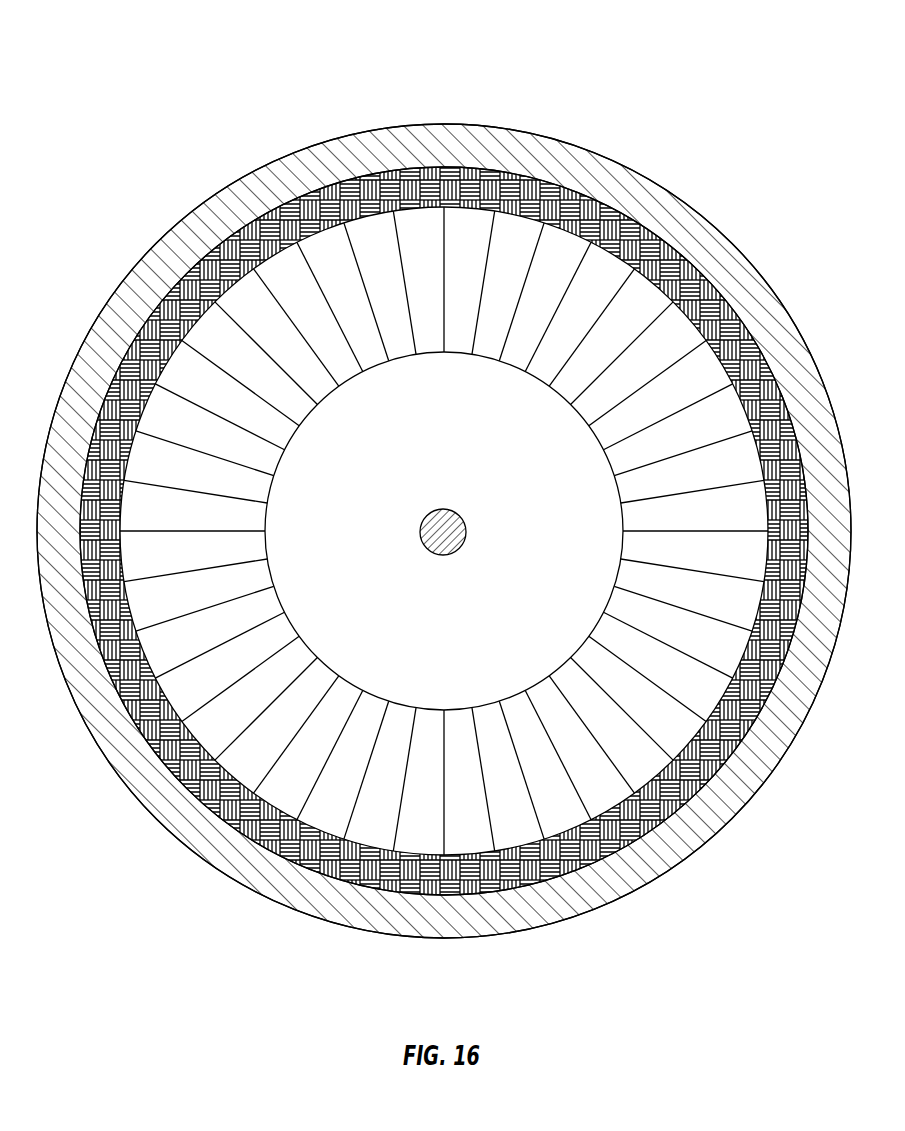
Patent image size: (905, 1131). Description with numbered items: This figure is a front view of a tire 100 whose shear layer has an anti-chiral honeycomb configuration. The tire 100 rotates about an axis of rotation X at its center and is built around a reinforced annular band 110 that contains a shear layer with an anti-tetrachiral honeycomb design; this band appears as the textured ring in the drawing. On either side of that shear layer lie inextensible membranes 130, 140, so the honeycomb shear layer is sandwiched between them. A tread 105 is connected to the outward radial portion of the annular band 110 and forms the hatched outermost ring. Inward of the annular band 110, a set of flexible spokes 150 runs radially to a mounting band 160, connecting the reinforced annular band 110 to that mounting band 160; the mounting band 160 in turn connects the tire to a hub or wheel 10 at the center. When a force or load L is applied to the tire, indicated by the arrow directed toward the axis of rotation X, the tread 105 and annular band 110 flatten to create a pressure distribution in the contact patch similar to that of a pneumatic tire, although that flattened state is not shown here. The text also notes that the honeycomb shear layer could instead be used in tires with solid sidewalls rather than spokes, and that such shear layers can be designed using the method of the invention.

The tire 100 is at (690, 54).
The tread 105 is at (382, 126).
The reinforced annular band 110 is at (500, 168).
The inextensible membrane 130 is at (196, 738).
The inextensible membrane 140 is at (150, 757).
The radial ribs 150 is at (268, 558).
The mounting band 160 is at (280, 466).
The hub or wheel 10 is at (449, 651).
The axis of rotation X is at (466, 533).
The load L is at (443, 508).